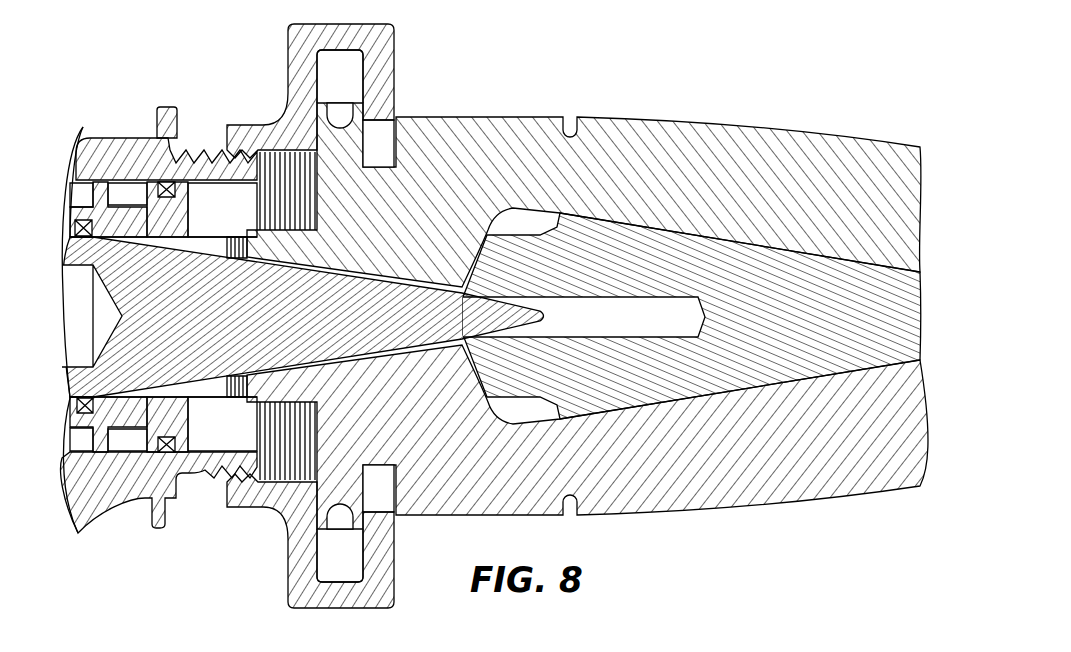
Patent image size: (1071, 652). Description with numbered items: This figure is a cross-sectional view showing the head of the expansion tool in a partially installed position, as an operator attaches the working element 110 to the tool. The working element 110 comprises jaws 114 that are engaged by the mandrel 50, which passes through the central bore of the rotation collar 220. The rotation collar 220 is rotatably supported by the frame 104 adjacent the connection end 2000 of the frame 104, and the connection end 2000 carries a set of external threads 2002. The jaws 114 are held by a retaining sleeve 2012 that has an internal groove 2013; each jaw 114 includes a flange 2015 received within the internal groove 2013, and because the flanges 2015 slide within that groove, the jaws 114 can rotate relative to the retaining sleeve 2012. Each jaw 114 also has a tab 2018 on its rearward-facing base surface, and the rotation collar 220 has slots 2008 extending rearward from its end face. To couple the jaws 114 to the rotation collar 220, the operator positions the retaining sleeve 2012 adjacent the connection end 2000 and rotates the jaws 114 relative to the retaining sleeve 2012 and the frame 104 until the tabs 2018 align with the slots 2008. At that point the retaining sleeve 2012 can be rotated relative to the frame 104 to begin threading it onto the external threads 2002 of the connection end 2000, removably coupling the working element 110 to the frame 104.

The mandrel 50 is at (157, 383).
The frame 104 is at (80, 158).
The working element 110 is at (680, 82).
The jaws 114 is at (777, 150).
The rotation collar 220 is at (220, 202).
The connection end 2000 is at (200, 143).
The external threads 2002 is at (233, 387).
The slots 2008 is at (163, 358).
The retaining sleeve 2012 is at (296, 82).
The internal groove 2013 is at (337, 80).
The flange 2015 is at (357, 136).
The tab 2018 is at (270, 517).